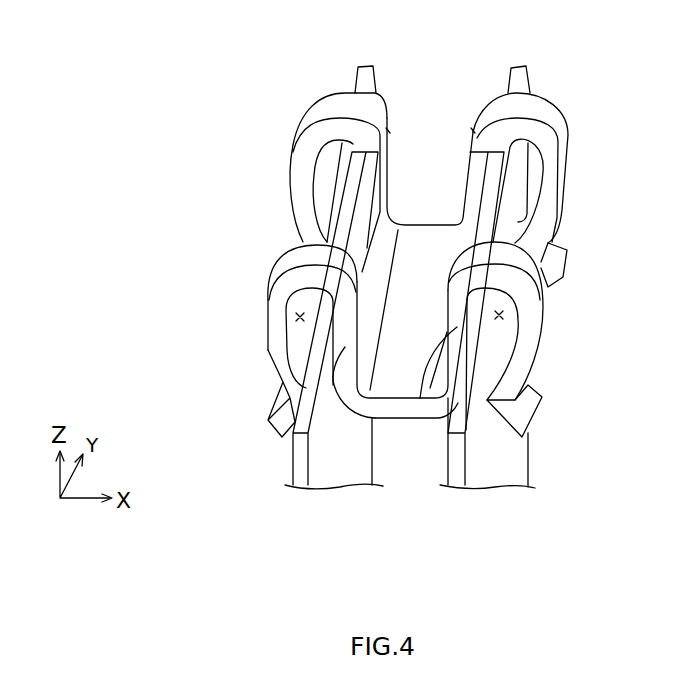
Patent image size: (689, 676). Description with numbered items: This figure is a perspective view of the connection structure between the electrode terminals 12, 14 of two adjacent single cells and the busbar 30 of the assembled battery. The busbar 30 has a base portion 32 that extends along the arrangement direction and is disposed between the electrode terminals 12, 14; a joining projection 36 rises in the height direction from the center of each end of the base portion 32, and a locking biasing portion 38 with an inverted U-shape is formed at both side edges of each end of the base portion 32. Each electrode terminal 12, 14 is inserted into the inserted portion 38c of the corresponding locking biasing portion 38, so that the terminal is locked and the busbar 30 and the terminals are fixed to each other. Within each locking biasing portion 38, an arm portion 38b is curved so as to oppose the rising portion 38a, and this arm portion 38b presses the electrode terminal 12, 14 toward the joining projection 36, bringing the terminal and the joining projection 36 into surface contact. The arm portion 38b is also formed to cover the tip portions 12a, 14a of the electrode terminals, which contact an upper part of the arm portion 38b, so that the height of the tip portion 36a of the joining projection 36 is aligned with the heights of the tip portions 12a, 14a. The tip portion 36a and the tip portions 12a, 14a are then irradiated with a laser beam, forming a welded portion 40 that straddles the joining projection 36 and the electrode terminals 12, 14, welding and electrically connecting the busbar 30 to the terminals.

The electrode terminal 12 is at (518, 469).
The tip portion of electrode terminal 12a is at (522, 68).
The electrode terminal 14 is at (292, 470).
The tip portion of electrode terminal 14a is at (368, 68).
The busbar 30 is at (423, 221).
The base portion 32 is at (400, 418).
The joining projection 36 is at (385, 198).
The tip portion of joining projection 36a is at (472, 129).
The locking biasing portion 38 is at (267, 270).
The rising portion 38a is at (340, 402).
The arm portion 38b is at (304, 208).
The inserted portion 38c is at (296, 318).
The welded portion 40 is at (345, 167).